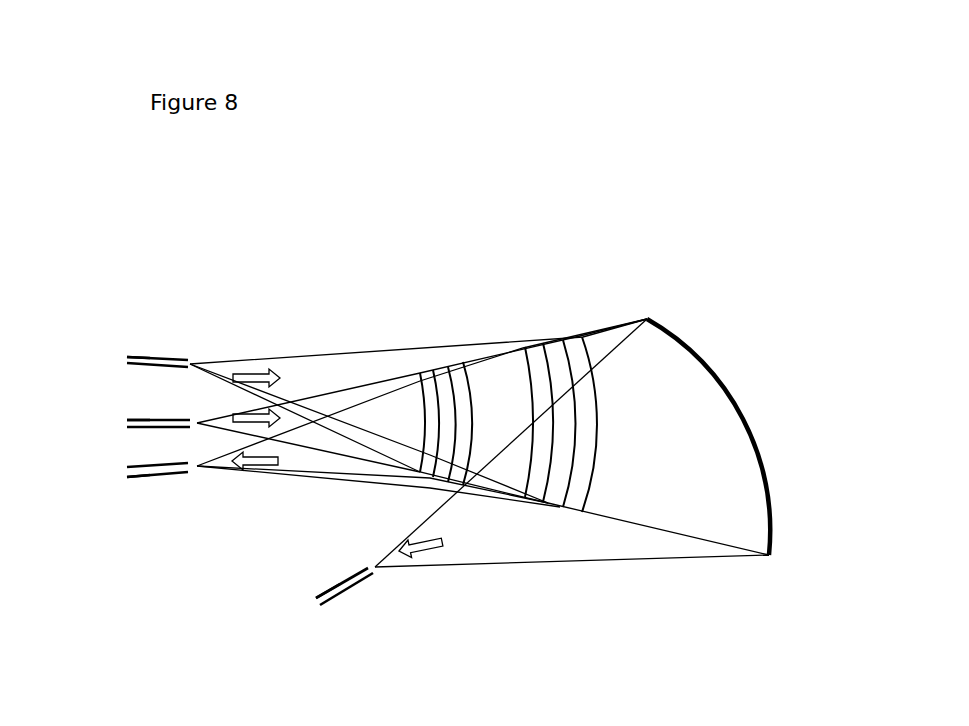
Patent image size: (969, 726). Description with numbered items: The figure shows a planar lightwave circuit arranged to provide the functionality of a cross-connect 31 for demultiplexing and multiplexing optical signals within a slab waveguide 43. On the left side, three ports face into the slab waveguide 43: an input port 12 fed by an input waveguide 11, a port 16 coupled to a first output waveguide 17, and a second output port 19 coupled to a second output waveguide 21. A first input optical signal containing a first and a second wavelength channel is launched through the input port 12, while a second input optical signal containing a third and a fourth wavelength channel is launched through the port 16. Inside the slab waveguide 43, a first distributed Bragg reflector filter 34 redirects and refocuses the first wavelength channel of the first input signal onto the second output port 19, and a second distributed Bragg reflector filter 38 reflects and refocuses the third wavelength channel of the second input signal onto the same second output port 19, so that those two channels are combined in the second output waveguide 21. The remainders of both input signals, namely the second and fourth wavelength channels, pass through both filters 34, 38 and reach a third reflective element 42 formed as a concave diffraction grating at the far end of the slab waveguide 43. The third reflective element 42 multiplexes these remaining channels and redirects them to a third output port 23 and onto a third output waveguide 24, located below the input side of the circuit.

The cross-connect 31 is at (338, 262).
The port 16 is at (190, 358).
The first output waveguide 17 is at (140, 357).
The input port 12 is at (197, 418).
The input waveguide 11 is at (140, 420).
The second output port 19 is at (195, 470).
The second output waveguide 21 is at (140, 475).
The third output port 23 is at (385, 577).
The third output waveguide 24 is at (330, 588).
The first distributed Bragg reflector filter 34 is at (440, 390).
The second distributed Bragg reflector filter 38 is at (563, 358).
The third reflective element 42 is at (772, 490).
The slab waveguide 43 is at (637, 431).